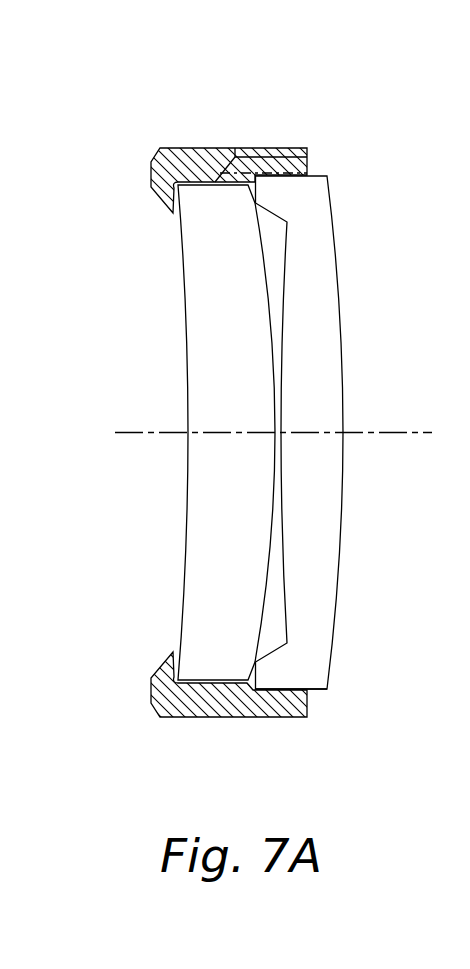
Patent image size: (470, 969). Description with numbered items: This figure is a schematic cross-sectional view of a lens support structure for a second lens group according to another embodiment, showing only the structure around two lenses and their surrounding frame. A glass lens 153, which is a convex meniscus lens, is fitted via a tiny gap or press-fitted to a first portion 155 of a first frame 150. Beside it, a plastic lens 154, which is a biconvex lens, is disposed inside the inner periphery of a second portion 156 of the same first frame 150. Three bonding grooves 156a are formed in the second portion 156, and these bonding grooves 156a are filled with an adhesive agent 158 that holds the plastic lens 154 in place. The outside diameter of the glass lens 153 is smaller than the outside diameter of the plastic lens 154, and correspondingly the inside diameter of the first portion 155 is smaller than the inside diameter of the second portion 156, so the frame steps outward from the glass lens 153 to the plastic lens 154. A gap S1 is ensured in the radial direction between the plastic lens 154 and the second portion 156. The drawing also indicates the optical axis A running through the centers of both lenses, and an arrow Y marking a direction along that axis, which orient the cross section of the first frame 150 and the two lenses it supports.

The first frame 150 is at (277, 141).
The glass lens 153 is at (195, 235).
The plastic lens 154 is at (320, 267).
The first portion 155 is at (190, 158).
The second portion 156 is at (305, 149).
The bonding grooves 156a is at (308, 166).
The adhesive agent 158 is at (236, 152).
The gap S1 is at (317, 692).
The optical axis A is at (259, 433).
The Y direction Y is at (303, 38).